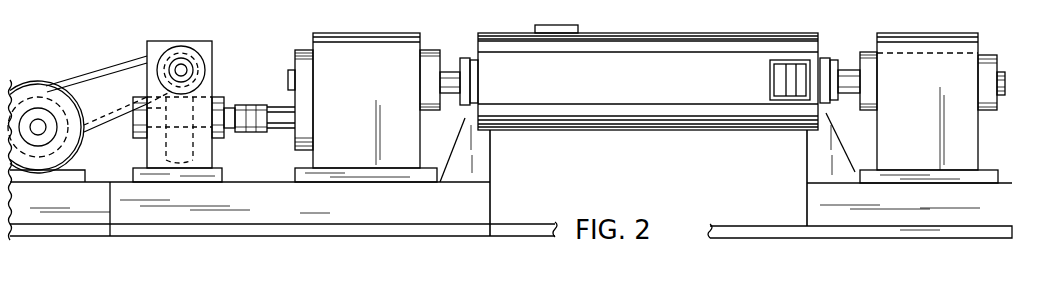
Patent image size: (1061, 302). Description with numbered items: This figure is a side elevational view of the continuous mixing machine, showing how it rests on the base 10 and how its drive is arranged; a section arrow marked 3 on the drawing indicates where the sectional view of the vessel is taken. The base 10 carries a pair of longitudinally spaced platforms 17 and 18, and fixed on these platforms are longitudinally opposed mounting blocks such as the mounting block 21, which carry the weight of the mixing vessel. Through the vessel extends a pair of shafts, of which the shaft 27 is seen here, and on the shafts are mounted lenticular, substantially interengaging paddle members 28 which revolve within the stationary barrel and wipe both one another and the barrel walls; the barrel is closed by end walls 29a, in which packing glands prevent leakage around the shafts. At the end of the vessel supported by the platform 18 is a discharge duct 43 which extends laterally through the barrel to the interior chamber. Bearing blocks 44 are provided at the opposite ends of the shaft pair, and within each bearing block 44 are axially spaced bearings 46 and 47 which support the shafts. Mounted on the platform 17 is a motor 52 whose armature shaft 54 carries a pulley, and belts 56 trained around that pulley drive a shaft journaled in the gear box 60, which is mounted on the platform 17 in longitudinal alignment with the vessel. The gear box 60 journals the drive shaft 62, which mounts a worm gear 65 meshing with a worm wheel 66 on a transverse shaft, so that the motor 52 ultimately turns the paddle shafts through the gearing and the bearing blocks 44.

The cylinder housing (section line FIG. 3) 3 is at (518, 0).
The base 10 is at (739, 218).
The platform 17 is at (389, 0).
The platform 18 is at (913, 2).
The mounting block 21 is at (486, 160).
The shaft 27 is at (1008, 80).
The paddle member 28 is at (639, 3).
The end wall 29a is at (474, 0).
The discharge duct 43 is at (840, 52).
The bearing block 44 is at (378, 81).
The bearing 46 is at (869, 50).
The bearing 47 is at (989, 58).
The motor 52 is at (45, 84).
The armature shaft 54 is at (43, 124).
The belt 56 is at (118, 69).
The gear box 60 is at (213, 78).
The drive shaft 62 is at (180, 65).
The worm gear 65 is at (199, 53).
The worm wheel 66 is at (151, 143).